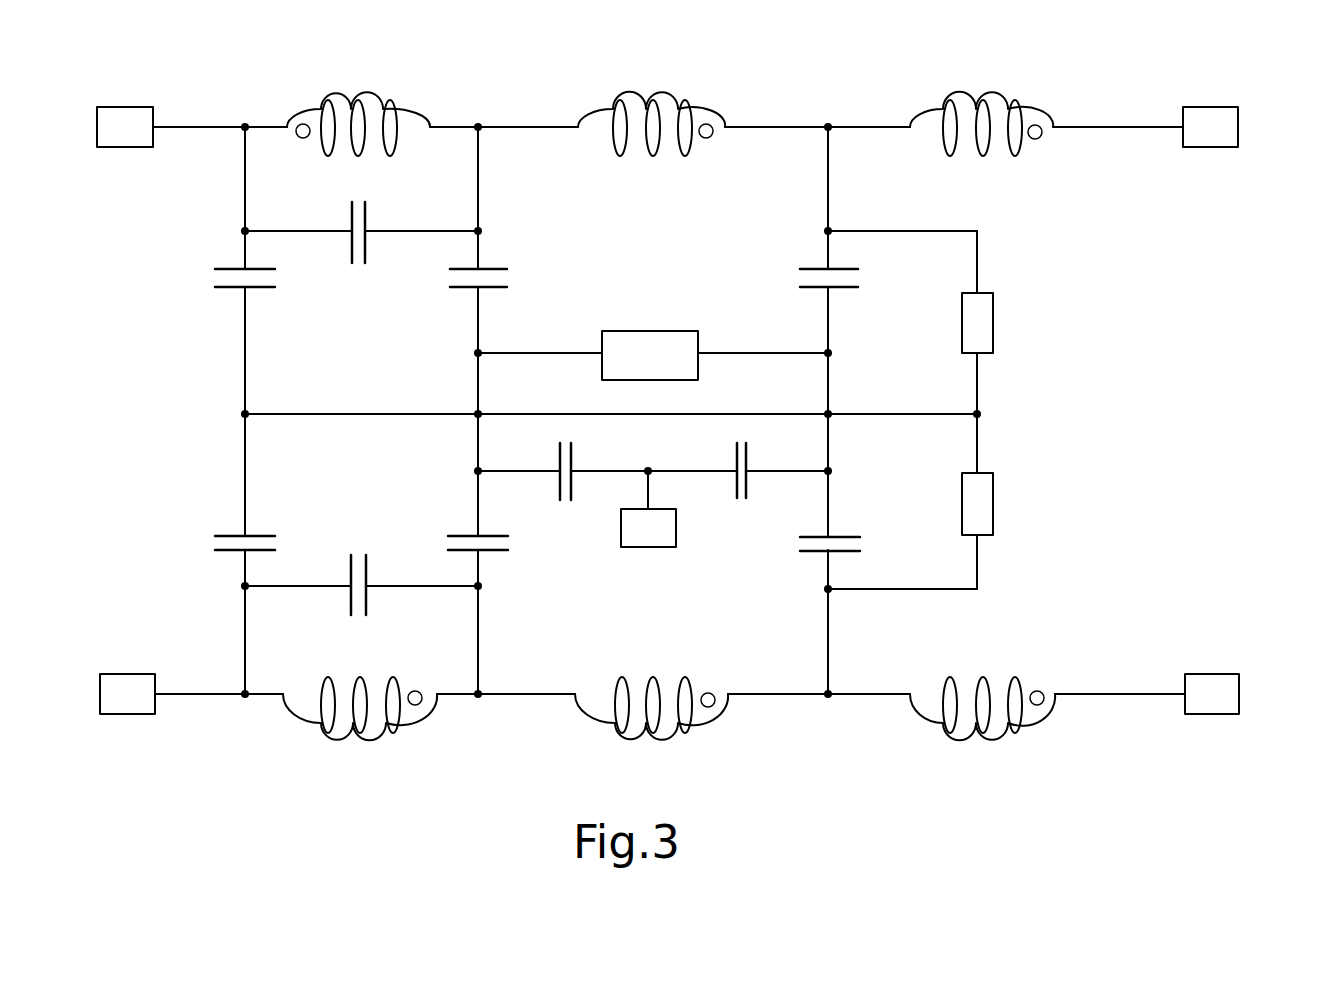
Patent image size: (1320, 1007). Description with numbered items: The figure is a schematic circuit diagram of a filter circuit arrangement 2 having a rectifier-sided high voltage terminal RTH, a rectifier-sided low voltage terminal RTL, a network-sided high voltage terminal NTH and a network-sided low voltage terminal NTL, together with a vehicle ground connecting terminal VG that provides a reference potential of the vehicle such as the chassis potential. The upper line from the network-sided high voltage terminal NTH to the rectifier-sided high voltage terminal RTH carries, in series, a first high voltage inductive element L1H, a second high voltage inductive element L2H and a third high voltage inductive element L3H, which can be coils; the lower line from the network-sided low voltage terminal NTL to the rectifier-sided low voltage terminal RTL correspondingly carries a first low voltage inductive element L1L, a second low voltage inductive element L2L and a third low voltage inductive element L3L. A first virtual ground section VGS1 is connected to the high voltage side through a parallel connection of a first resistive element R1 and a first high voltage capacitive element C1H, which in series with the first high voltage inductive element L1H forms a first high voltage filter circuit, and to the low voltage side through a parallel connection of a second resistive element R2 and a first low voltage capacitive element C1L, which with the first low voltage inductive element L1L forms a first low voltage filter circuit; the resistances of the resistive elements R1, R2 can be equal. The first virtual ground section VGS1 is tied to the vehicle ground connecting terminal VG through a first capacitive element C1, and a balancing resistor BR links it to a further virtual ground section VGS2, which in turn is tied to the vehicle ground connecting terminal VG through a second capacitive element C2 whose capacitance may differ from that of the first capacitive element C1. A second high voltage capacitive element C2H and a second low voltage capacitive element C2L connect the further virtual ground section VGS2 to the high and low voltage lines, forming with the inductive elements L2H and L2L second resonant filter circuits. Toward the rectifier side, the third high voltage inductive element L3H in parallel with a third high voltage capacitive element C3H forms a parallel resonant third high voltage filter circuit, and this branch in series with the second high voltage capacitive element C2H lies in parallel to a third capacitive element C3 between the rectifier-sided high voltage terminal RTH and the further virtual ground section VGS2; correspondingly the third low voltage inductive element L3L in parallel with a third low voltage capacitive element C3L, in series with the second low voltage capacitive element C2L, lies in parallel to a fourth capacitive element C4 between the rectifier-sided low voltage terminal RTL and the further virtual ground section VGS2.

The rectifier-sided high voltage terminal RTH is at (97, 107).
The network-sided high voltage terminal NTH is at (1238, 107).
The rectifier-sided low voltage terminal RTL is at (100, 674).
The network-sided low voltage terminal NTL is at (1239, 674).
The third high voltage inductive element L3H is at (378, 100).
The second high voltage inductive element L2H is at (672, 100).
The first high voltage inductive element L1H is at (997, 100).
The third low voltage inductive element L3L is at (372, 733).
The second low voltage inductive element L2L is at (672, 733).
The first low voltage inductive element L1L is at (998, 733).
The third capacitive element C3 is at (222, 269).
The third high voltage capacitive element C3H is at (350, 243).
The second high voltage capacitive element C2H is at (488, 270).
The first high voltage capacitive element C1H is at (848, 270).
The fourth capacitive element C4 is at (222, 536).
The third low voltage capacitive element C3L is at (365, 570).
The second low voltage capacitive element C2L is at (490, 550).
The first low voltage capacitive element C1L is at (848, 552).
The second capacitive element C2 is at (571, 455).
The first capacitive element C1 is at (750, 455).
The balancing resistor BR is at (645, 330).
The first resistive element R1 is at (995, 320).
The second resistive element R2 is at (995, 500).
The vehicle ground connecting terminal VG is at (642, 547).
The first virtual ground section VGS1 is at (830, 497).
The further virtual ground section VGS2 is at (475, 499).
The filter circuit arrangement 2 is at (241, 770).